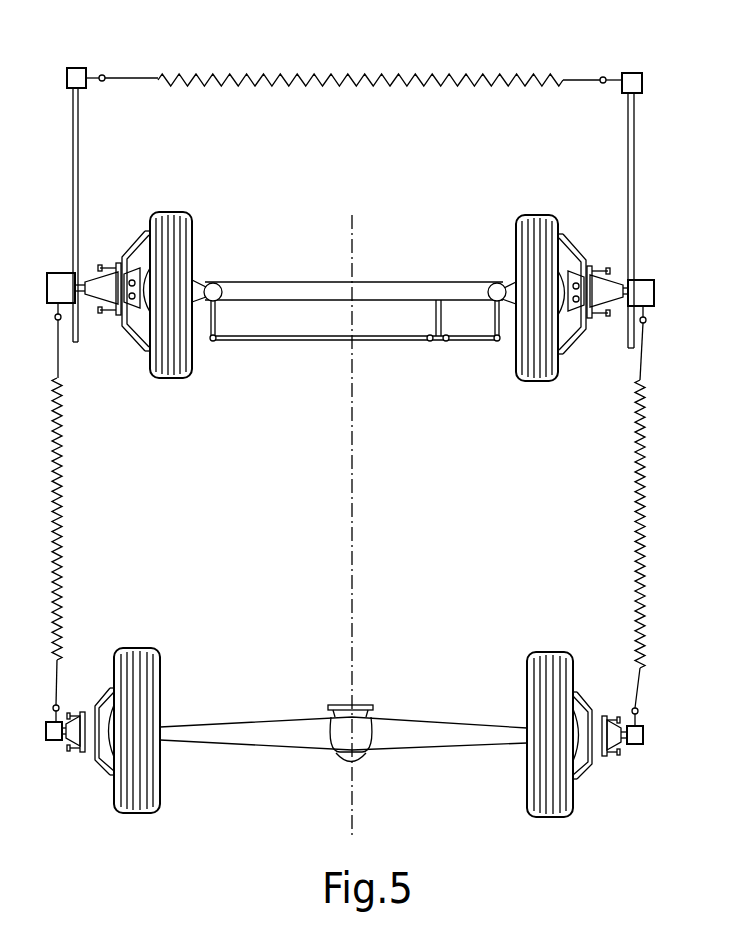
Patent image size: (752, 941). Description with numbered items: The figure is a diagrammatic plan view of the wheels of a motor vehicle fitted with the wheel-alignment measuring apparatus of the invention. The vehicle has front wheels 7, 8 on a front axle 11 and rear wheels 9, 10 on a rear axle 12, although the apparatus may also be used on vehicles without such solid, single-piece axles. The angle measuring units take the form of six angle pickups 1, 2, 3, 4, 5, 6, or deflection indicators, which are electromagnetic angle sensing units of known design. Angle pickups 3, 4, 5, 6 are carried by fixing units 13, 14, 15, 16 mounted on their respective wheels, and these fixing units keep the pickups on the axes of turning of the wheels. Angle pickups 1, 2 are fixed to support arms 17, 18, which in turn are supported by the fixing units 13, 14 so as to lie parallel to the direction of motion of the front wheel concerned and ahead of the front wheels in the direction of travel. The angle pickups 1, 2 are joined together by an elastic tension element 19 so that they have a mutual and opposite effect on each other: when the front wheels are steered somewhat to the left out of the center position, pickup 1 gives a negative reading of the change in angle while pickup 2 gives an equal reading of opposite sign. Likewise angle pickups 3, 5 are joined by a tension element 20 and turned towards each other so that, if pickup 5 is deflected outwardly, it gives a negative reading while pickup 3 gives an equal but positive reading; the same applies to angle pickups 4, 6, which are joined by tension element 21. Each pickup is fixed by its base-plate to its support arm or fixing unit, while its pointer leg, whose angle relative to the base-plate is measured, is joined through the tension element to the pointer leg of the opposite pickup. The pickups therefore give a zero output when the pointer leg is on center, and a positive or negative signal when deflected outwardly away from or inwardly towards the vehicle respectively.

The angle pickup 1 is at (77, 77).
The angle pickup 2 is at (634, 84).
The angle pickup 3 is at (58, 280).
The angle pickup 4 is at (641, 292).
The angle pickup 5 is at (54, 741).
The angle pickup 6 is at (634, 745).
The front wheel 7 is at (178, 378).
The front wheel 8 is at (528, 382).
The rear wheel 9 is at (138, 813).
The rear wheel 10 is at (545, 817).
The front axle 11 is at (382, 282).
The rear axle 12 is at (240, 728).
The fixing unit 13 is at (131, 238).
The fixing unit 14 is at (578, 258).
The fixing unit 15 is at (100, 770).
The fixing unit 16 is at (588, 771).
The support arm 17 is at (77, 162).
The support arm 18 is at (628, 190).
The elastic tension element 19 is at (350, 76).
The tension element 20 is at (60, 520).
The tension element 21 is at (637, 520).